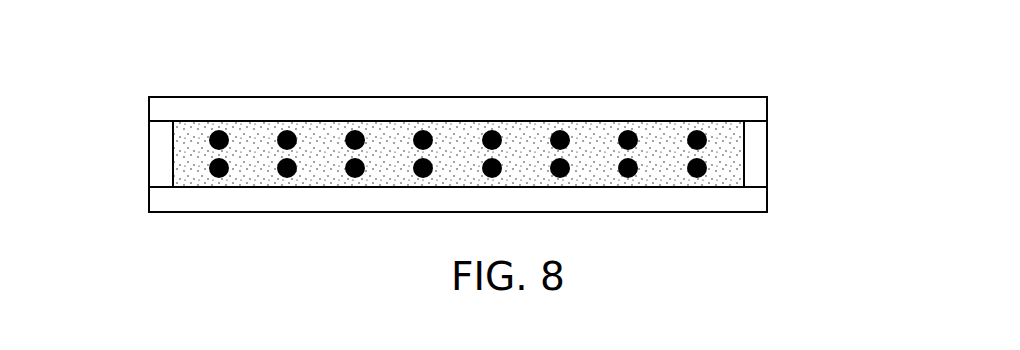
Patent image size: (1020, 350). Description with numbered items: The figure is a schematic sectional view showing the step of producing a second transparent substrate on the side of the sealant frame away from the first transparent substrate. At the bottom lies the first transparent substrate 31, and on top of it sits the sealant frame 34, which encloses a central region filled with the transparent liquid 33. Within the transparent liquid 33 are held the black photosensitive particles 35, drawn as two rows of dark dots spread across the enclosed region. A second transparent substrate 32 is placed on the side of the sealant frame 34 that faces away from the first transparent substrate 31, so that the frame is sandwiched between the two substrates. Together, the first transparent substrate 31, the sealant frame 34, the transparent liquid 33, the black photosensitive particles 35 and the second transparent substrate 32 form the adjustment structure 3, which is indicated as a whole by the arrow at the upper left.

The adjustment structure 3 is at (147, 62).
The first transparent substrate 31 is at (505, 182).
The second transparent substrate 32 is at (505, 91).
The transparent liquid 33 is at (463, 120).
The sealant frame 34 is at (505, 144).
The black photosensitive particles 35 is at (458, 115).